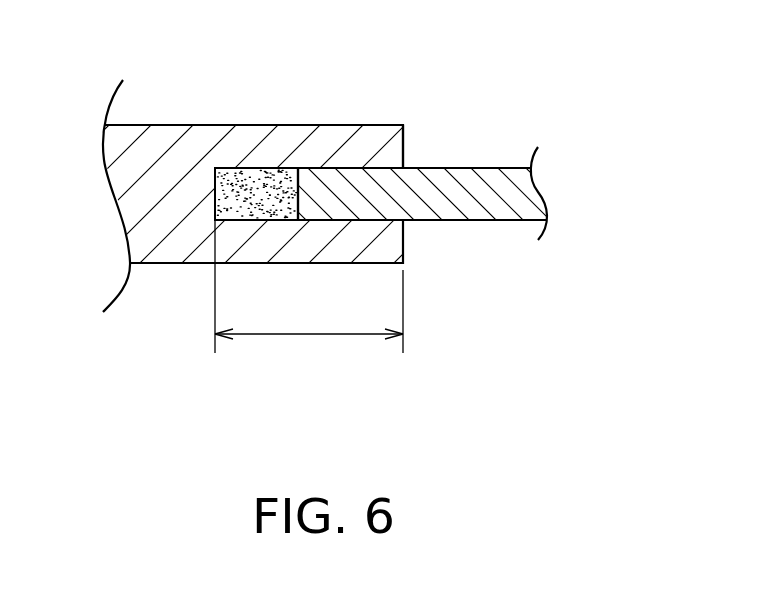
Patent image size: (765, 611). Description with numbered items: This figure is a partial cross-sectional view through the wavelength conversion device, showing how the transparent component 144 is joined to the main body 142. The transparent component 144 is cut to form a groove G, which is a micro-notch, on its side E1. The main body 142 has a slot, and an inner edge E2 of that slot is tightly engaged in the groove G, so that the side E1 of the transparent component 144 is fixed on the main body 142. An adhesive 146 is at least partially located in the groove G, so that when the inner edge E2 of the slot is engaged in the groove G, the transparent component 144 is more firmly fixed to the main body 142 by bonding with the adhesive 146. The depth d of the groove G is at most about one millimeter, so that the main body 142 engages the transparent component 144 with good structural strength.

The transparent component 144 is at (153, 142).
The adhesive 146 is at (258, 190).
The main body 142 is at (457, 187).
The side of the transparent component E1 is at (404, 148).
The inner edge of the slot E2 is at (297, 192).
The groove G is at (260, 220).
The depth of the groove d is at (309, 286).